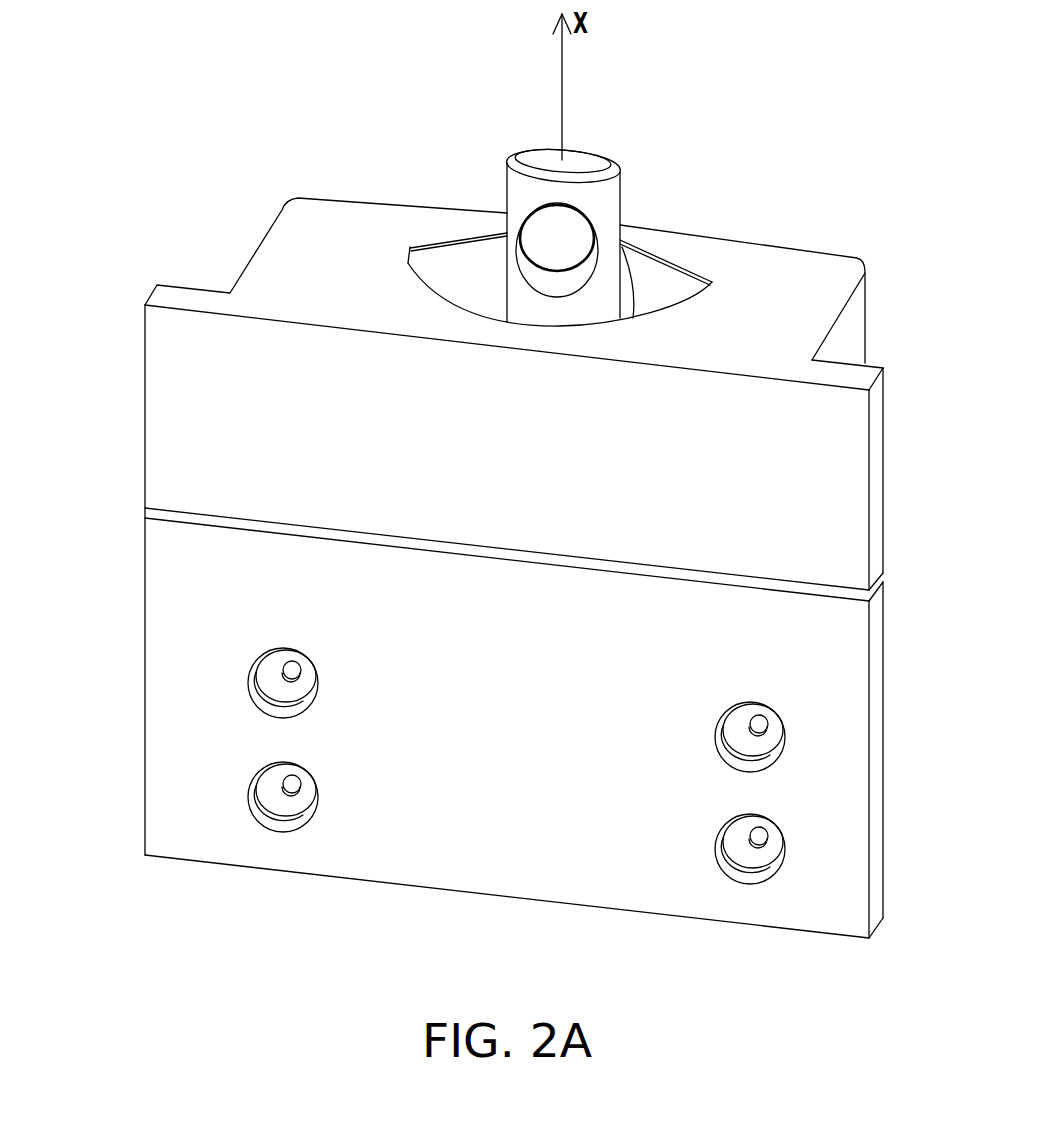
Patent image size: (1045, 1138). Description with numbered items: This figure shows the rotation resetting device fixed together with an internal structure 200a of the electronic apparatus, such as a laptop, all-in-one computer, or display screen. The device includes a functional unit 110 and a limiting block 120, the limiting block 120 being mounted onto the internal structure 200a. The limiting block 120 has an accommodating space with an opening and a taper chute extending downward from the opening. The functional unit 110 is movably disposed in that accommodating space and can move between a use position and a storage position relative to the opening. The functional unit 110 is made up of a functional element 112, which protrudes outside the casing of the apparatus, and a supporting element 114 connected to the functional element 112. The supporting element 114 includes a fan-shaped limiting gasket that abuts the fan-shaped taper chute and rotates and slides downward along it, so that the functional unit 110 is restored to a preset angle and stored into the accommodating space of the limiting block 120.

The functional unit 110 is at (253, 23).
The functional element 112 is at (557, 246).
The supporting element 114 is at (540, 190).
The limiting block 120 is at (758, 280).
The internal structure 200a is at (222, 702).